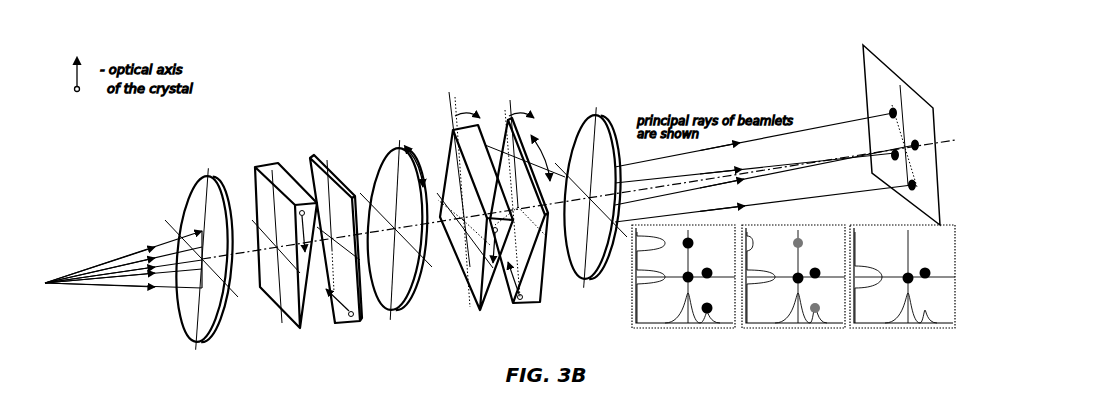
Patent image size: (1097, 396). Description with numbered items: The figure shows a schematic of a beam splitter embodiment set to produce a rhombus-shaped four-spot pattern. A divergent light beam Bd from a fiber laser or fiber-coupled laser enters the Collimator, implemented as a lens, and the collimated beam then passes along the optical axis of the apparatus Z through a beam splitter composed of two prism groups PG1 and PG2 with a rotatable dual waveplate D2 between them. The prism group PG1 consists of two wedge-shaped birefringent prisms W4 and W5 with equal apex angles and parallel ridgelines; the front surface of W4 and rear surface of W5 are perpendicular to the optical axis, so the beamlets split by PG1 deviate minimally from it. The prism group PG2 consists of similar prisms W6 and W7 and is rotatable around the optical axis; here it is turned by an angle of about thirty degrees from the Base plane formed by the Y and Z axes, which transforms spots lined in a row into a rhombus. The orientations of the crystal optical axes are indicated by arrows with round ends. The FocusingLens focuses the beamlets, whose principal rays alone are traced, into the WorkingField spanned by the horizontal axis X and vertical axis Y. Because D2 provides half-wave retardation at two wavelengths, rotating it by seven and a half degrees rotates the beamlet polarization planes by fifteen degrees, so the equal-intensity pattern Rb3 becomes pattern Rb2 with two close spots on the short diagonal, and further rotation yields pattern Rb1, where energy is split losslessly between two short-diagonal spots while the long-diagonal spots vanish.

The divergent light beam Bd is at (123, 259).
The collimator Collimator is at (187, 186).
The prism group PG1 is at (345, 124).
The wedge-shaped birefringent prism W4 is at (265, 167).
The wedge-shaped birefringent prism W5 is at (312, 158).
The rotatable dual waveplate D2 is at (387, 148).
The prism group PG2 is at (527, 64).
The wedge-shaped birefringent prism W6 is at (456, 104).
The wedge-shaped birefringent prism W7 is at (510, 104).
The focusing optical system FocusingLens is at (598, 122).
The working field WorkingField is at (856, 134).
The horizontal axis X is at (925, 196).
The vertical axis Y is at (888, 91).
The optical axis of the apparatus Z is at (946, 130).
The rhombic multi-spot pattern Rb1 is at (902, 292).
The rhombic multi-spot pattern Rb2 is at (793, 292).
The rhombic multi-spot pattern Rb3 is at (683, 292).